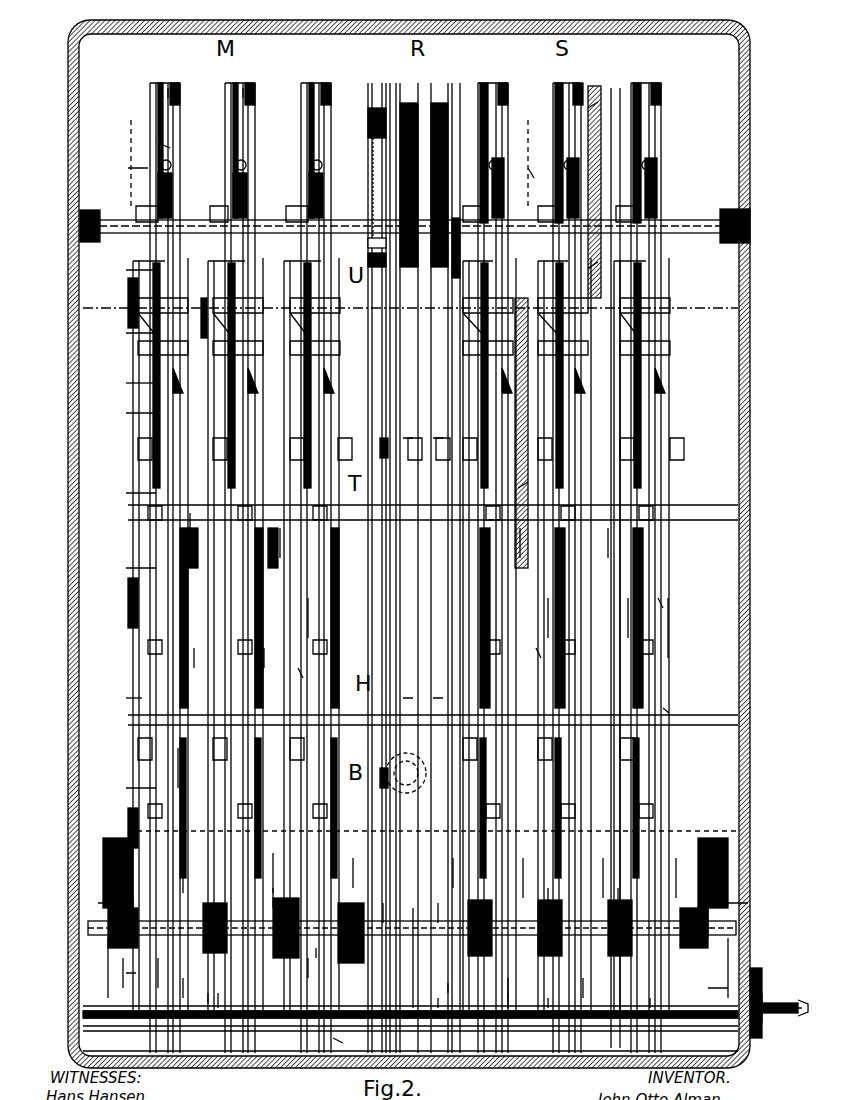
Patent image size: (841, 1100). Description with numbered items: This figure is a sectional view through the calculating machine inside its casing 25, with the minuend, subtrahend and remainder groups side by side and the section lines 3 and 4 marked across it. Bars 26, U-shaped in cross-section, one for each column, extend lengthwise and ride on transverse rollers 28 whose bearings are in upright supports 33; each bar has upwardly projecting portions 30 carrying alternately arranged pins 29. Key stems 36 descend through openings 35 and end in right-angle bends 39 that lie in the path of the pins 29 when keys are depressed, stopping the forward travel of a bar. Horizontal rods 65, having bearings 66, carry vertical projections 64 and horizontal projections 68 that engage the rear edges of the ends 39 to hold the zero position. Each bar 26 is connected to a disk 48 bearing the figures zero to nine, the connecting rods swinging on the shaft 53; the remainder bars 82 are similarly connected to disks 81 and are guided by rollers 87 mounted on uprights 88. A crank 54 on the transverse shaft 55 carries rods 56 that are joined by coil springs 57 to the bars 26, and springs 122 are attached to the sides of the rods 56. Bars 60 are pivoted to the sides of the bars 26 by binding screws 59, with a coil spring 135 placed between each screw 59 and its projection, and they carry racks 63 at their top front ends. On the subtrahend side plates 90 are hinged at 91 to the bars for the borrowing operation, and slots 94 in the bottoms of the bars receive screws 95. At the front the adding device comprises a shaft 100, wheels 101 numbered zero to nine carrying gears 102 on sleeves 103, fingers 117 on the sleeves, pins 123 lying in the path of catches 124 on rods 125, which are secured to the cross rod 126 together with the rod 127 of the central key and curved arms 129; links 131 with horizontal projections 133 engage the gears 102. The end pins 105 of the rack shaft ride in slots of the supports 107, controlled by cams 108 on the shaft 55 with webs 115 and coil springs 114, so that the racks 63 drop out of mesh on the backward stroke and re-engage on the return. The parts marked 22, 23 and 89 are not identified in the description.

The section line 3 is at (38, 1047).
The section line 4 is at (764, 823).
The shaft 22 is at (342, 976).
The gear 23 is at (371, 894).
The casing 25 is at (74, 522).
The bars 26 is at (295, 74).
The rollers 28 is at (146, 458).
The pins 29 is at (172, 86).
The upwardly projecting portions 30 is at (389, 414).
The upright supports 33 is at (120, 452).
The openings 35 is at (678, 712).
The key stems 36 is at (160, 254).
The lower ends of key stems 39 is at (140, 346).
The disks 48 is at (371, 200).
The shaft 53 is at (120, 223).
The crank 54 is at (754, 976).
The shaft 55 is at (450, 991).
The rods 56 is at (418, 816).
The coil springs 57 is at (398, 741).
The binding screws 59 is at (445, 555).
The bars 60 is at (505, 616).
The racks 63 is at (440, 773).
The vertical projections 64 is at (128, 380).
The horizontal rods 65 is at (152, 624).
The bearings 66 is at (153, 563).
The horizontal projections 68 is at (128, 526).
The disks 81 is at (368, 92).
The bars 82 is at (462, 76).
The rollers 87 is at (421, 554).
The uprights 88 is at (415, 601).
The spring 89 is at (676, 605).
The plates 90 is at (590, 145).
The hinges 91 is at (588, 109).
The slots 94 is at (525, 173).
The screws 95 is at (423, 318).
The shaft 100 is at (441, 906).
The wheels 101 is at (439, 866).
The gears 102 is at (377, 906).
The sleeves 103 is at (473, 906).
The pins 105 is at (432, 898).
The supports 107 is at (409, 938).
The cams 108 is at (414, 982).
The coil springs 114 is at (404, 861).
The webs 115 is at (405, 875).
The fingers 117 is at (415, 976).
The springs 122 is at (384, 980).
The pins 123 is at (450, 930).
The catches 124 is at (139, 971).
The rods 125 is at (210, 1036).
The cross rod 126 is at (352, 1043).
The rod 127 is at (404, 975).
The curved arms 129 is at (431, 961).
The links 131 is at (470, 969).
The horizontal projections 133 is at (477, 963).
The coil spring 135 is at (409, 528).